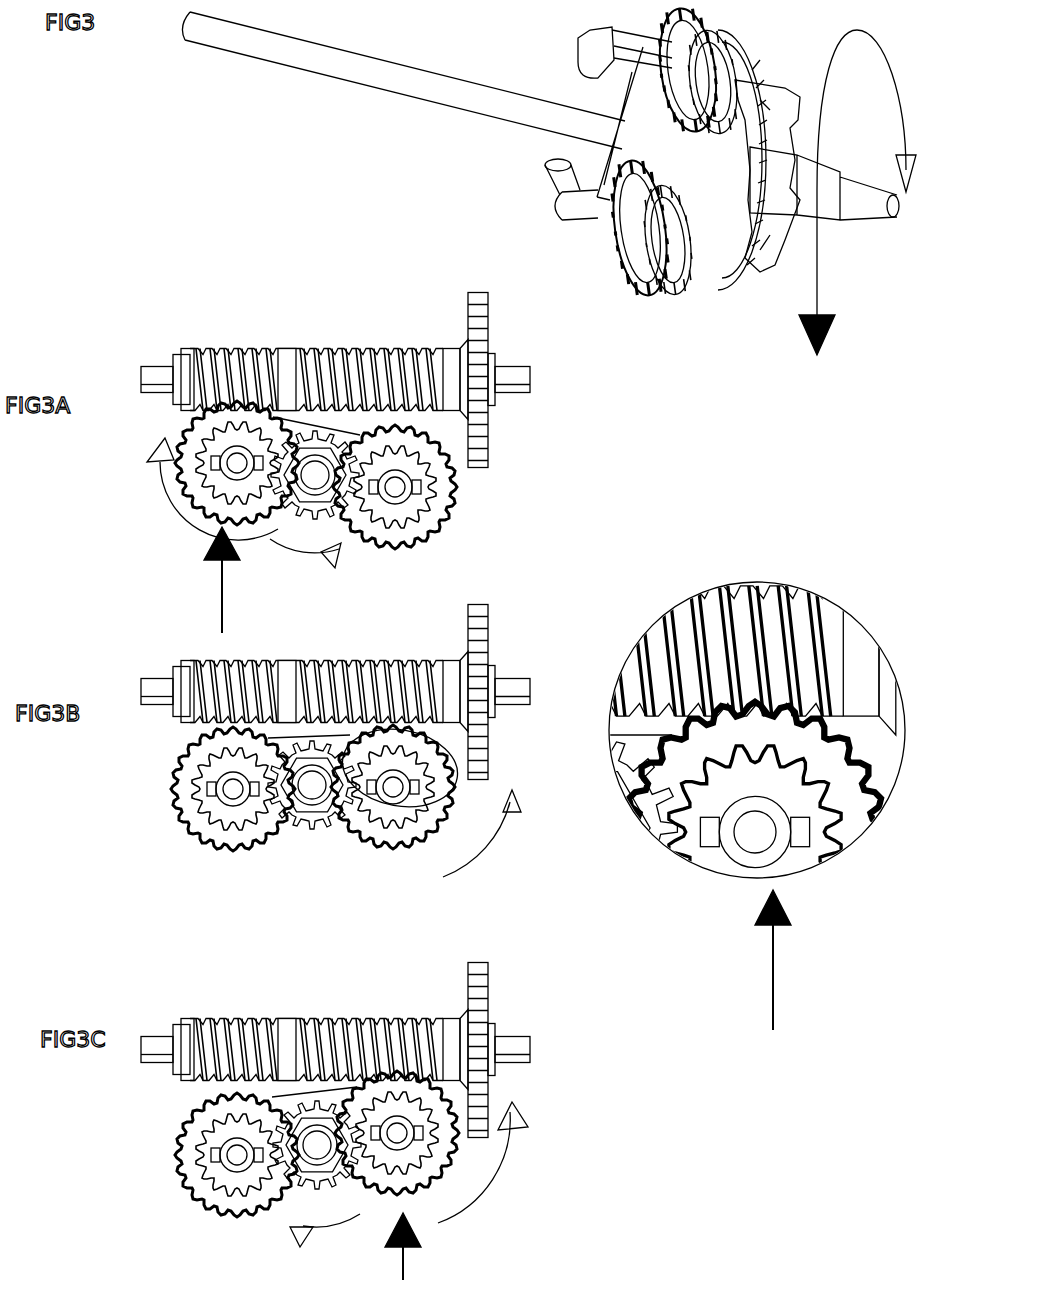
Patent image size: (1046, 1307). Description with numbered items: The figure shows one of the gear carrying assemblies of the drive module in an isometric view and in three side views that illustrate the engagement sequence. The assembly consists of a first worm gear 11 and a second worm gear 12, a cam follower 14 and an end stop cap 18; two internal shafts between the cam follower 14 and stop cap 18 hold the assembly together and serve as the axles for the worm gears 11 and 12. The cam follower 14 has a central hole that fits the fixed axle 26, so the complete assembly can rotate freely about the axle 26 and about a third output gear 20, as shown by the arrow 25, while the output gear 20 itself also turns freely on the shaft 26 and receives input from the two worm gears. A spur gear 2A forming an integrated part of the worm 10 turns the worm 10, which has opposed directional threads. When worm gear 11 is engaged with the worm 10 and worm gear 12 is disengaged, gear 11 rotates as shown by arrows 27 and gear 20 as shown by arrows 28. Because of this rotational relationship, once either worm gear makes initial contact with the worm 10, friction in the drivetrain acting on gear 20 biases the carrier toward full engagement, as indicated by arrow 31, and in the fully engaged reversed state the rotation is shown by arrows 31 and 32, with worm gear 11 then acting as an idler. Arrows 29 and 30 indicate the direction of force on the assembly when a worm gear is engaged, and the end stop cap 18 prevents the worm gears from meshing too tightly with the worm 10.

In FIG. 3A, the worm 10 is at (292, 348).
In FIG. 3B, the worm 10 is at (185, 705).
In FIG. 3C, the worm 10 is at (277, 1020).
In FIG. 3, the first worm gear 11 is at (662, 278).
In FIG. 3A, the first worm gear 11 is at (180, 437).
In FIG. 3B, the first worm gear 11 is at (203, 802).
In FIG. 3C, the first worm gear 11 is at (233, 1163).
In FIG. 3, the second worm gear 12 is at (723, 43).
In FIG. 3A, the second worm gear 12 is at (455, 487).
In FIG. 3B, the second worm gear 12 is at (408, 828).
In FIG. 3C, the second worm gear 12 is at (425, 1175).
In FIG. 3, the cam follower 14 is at (540, 197).
In FIG. 3, the end stop cap 18 is at (730, 228).
In FIG. 3, the third output gear 20 is at (687, 143).
In FIG. 3A, the third output gear 20 is at (318, 478).
In FIG. 3B, the third output gear 20 is at (315, 793).
In FIG. 3C, the third output gear 20 is at (317, 1145).
In FIG. 3, the arrow 25 is at (857, 208).
In FIG. 3, the fixed axle 26 is at (350, 75).
In FIG. 3A, the arrows 27 is at (192, 489).
In FIG. 3A, the arrows 28 is at (305, 564).
In FIG. 3A, the arrow 29 is at (213, 580).
In FIG. 3B, the arrow 30 is at (773, 977).
In FIG. 3C, the arrow 30 is at (406, 1259).
In FIG. 3B, the arrow 31 is at (485, 833).
In FIG. 3C, the arrow 31 is at (486, 1162).
In FIG. 3C, the arrow 32 is at (325, 1240).
In FIG. 3, the spur gear 2A is at (742, 160).
In FIG. 3A, the spur gear 2A is at (490, 323).
In FIG. 3B, the spur gear 2A is at (490, 652).
In FIG. 3C, the spur gear 2A is at (492, 993).